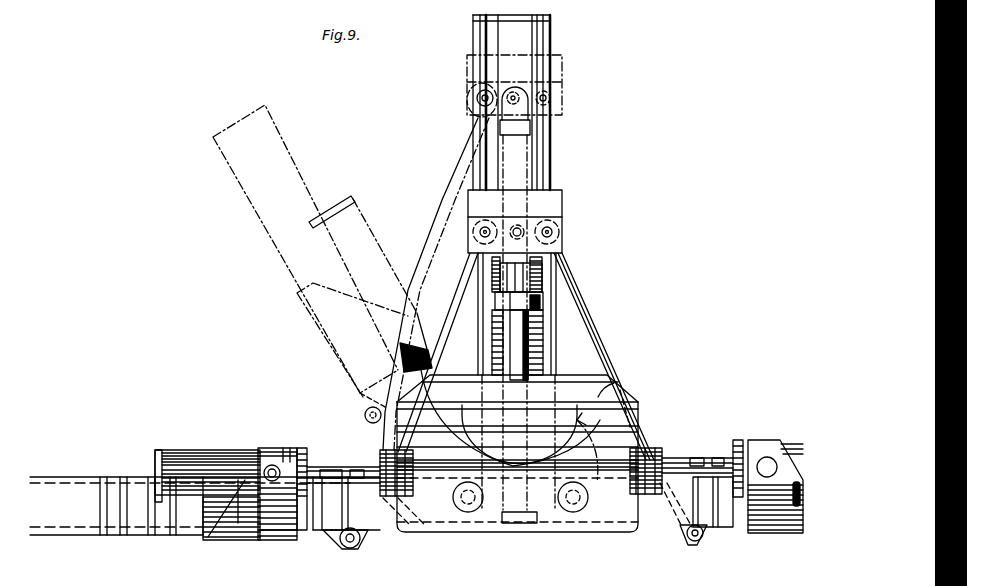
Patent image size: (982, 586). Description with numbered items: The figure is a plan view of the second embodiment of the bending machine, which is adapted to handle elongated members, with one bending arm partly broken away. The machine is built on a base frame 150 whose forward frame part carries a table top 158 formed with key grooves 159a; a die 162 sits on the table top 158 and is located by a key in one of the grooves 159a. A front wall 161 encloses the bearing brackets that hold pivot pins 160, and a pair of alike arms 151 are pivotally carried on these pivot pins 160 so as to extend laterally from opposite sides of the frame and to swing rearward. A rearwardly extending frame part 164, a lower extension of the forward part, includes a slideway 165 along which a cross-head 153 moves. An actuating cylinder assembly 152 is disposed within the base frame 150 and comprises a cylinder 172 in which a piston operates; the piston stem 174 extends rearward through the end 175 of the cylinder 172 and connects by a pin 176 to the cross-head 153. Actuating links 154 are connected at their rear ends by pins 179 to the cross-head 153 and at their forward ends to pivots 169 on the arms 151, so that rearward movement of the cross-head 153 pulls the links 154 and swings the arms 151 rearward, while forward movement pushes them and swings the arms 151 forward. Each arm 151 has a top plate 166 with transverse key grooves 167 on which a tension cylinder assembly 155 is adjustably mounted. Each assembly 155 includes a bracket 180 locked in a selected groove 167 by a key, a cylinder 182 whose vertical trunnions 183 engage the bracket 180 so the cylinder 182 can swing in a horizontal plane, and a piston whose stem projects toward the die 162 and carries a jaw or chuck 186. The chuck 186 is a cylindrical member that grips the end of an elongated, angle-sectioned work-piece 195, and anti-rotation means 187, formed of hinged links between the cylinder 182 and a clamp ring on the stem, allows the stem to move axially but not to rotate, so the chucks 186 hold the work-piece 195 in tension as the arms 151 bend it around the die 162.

The base frame 150 is at (555, 156).
The arm 151 is at (265, 243).
The actuating cylinder assembly 152 is at (540, 352).
The cross-head 153 is at (569, 73).
The actuating link 154 is at (455, 295).
The tension cylinder assembly 155 is at (315, 336).
The table top 158 is at (614, 388).
The key groove 159a is at (625, 427).
The pivot pin 160 is at (468, 512).
The front wall 161 is at (566, 532).
The die 162 is at (535, 415).
The rearwardly extending frame part 164 is at (548, 39).
The slideway 165 is at (544, 133).
The top plate 166 is at (133, 483).
The transverse key groove 167 is at (102, 497).
The pivot 169 is at (364, 414).
The cylinder 172 is at (496, 334).
The stem 174 is at (520, 272).
The end of the cylinder 175 is at (531, 296).
The pin 176 is at (515, 226).
The pin 179 is at (470, 99).
The bracket 180 is at (330, 288).
The cylinder 182 is at (387, 253).
The trunnion 183 is at (280, 463).
The jaw or chuck 186 is at (379, 450).
The anti-rotation means 187 is at (335, 465).
The work-piece 195 is at (582, 442).